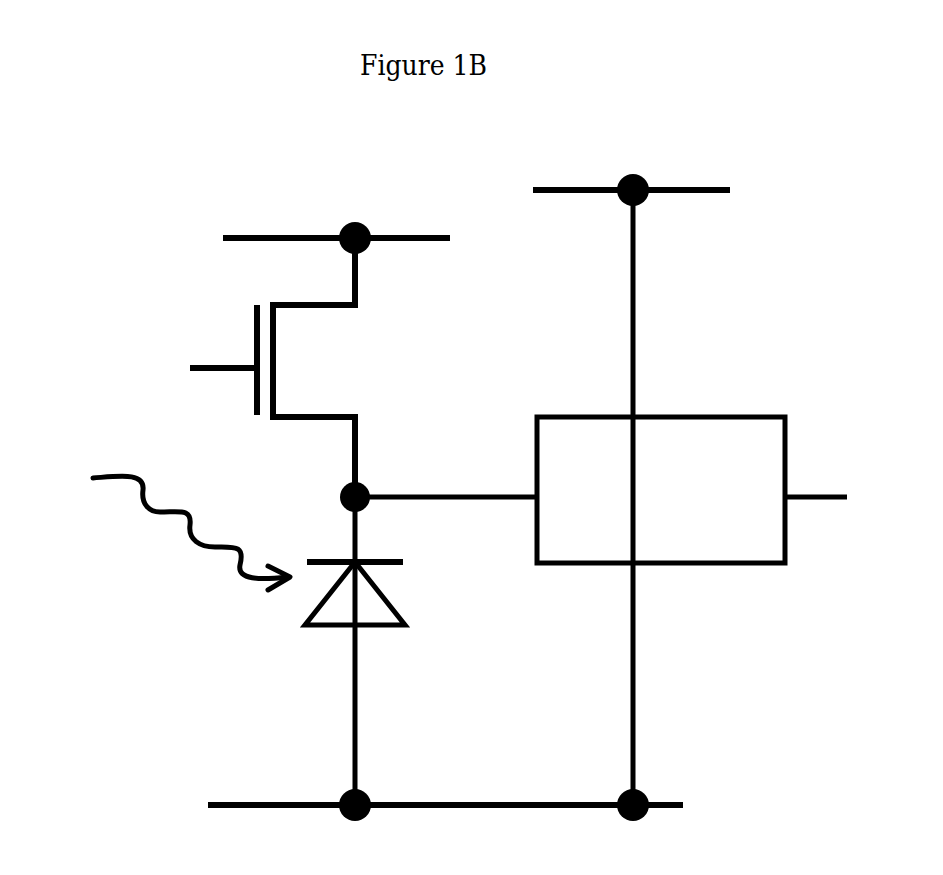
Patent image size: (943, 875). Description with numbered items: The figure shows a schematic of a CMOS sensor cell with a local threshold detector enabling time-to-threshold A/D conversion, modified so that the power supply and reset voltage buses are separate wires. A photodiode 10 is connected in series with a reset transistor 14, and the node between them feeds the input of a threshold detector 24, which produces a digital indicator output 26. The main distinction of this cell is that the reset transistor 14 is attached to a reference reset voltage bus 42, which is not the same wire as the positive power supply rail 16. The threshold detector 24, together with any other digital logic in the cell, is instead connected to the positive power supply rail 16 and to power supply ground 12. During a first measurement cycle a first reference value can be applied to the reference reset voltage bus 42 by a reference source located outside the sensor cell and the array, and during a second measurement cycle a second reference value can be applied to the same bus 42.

The photodiode 10 is at (332, 627).
The power supply ground 12 is at (267, 802).
The reset transistor 14 is at (253, 320).
The positive power supply rail 16 is at (683, 193).
The threshold detector 24 is at (585, 563).
The digital indicator output 26 is at (812, 500).
The reference reset voltage bus 42 is at (283, 237).